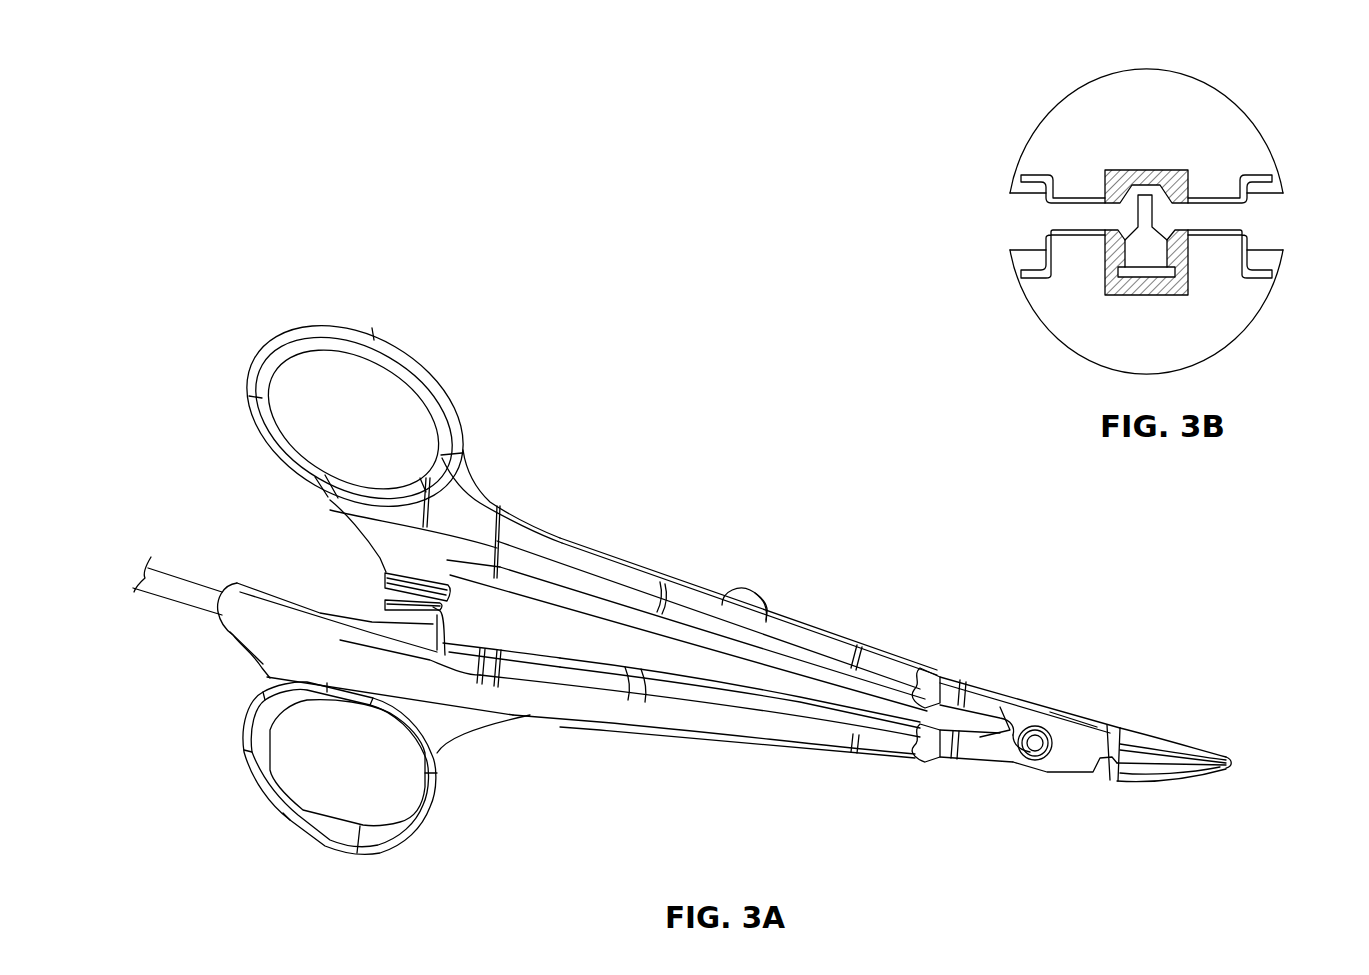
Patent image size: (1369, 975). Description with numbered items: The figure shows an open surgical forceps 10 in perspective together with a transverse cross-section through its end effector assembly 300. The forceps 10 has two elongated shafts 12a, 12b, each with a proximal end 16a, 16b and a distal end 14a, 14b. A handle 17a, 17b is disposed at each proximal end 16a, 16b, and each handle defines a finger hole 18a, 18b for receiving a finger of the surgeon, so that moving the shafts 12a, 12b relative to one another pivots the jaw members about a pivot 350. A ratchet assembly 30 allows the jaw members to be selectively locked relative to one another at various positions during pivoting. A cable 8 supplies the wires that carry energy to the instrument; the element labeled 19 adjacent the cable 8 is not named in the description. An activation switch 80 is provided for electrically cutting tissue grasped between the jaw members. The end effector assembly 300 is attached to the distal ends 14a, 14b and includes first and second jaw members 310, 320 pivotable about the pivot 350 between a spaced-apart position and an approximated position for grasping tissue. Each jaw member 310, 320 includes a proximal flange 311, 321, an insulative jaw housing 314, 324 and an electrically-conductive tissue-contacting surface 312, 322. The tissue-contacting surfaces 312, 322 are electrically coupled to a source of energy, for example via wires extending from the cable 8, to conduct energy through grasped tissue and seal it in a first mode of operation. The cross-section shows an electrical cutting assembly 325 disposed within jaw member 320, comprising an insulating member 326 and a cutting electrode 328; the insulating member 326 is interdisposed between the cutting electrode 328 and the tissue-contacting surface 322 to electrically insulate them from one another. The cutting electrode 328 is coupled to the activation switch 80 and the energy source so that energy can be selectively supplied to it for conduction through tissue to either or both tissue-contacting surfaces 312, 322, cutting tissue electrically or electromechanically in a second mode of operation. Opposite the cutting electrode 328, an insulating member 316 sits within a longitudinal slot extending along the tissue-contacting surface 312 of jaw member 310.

In FIG. 3A, the forceps 10 is at (750, 462).
In FIG. 3A, the cable 8 is at (182, 600).
In FIG. 3A, the housing 19 is at (225, 632).
In FIG. 3A, the ratchet assembly 30 is at (382, 575).
In FIG. 3A, the handle 17a is at (332, 332).
In FIG. 3A, the handle 17b is at (350, 846).
In FIG. 3A, the finger hole 18a is at (328, 405).
In FIG. 3A, the finger hole 18b is at (328, 766).
In FIG. 3A, the proximal end 16a is at (492, 508).
In FIG. 3A, the proximal end 16b is at (482, 724).
In FIG. 3A, the elongated shaft 12a is at (615, 578).
In FIG. 3A, the elongated shaft 12b is at (636, 722).
In FIG. 3A, the activation switch 80 is at (765, 575).
In FIG. 3A, the distal end 14a is at (920, 660).
In FIG. 3A, the distal end 14b is at (905, 737).
In FIG. 3A, the pivot 350 is at (1030, 748).
In FIG. 3A, the proximal flange 311 is at (1063, 708).
In FIG. 3A, the proximal flange 321 is at (1002, 747).
In FIG. 3A, the end effector assembly 300 is at (1238, 684).
In FIG. 3B, the end effector assembly 300 is at (1240, 42).
In FIG. 3A, the first jaw member 310 is at (1146, 730).
In FIG. 3B, the first jaw member 310 is at (1062, 78).
In FIG. 3A, the second jaw member 320 is at (1142, 782).
In FIG. 3B, the second jaw member 320 is at (1056, 350).
In FIG. 3A, the insulative jaw housing 314 is at (1200, 745).
In FIG. 3B, the insulative jaw housing 314 is at (1210, 95).
In FIG. 3A, the tissue-contacting surface 312 is at (1228, 756).
In FIG. 3B, the tissue-contacting surface 312 is at (1228, 208).
In FIG. 3B, the insulating member 316 is at (1135, 175).
In FIG. 3A, the tissue-contacting surface 322 is at (1228, 763).
In FIG. 3B, the tissue-contacting surface 322 is at (1230, 223).
In FIG. 3A, the insulative jaw housing 324 is at (1200, 775).
In FIG. 3B, the insulative jaw housing 324 is at (1240, 308).
In FIG. 3B, the insulating member 326 is at (1133, 287).
In FIG. 3B, the cutting electrode 328 is at (1145, 250).
In FIG. 3B, the electrical cutting assembly 325 is at (1165, 312).